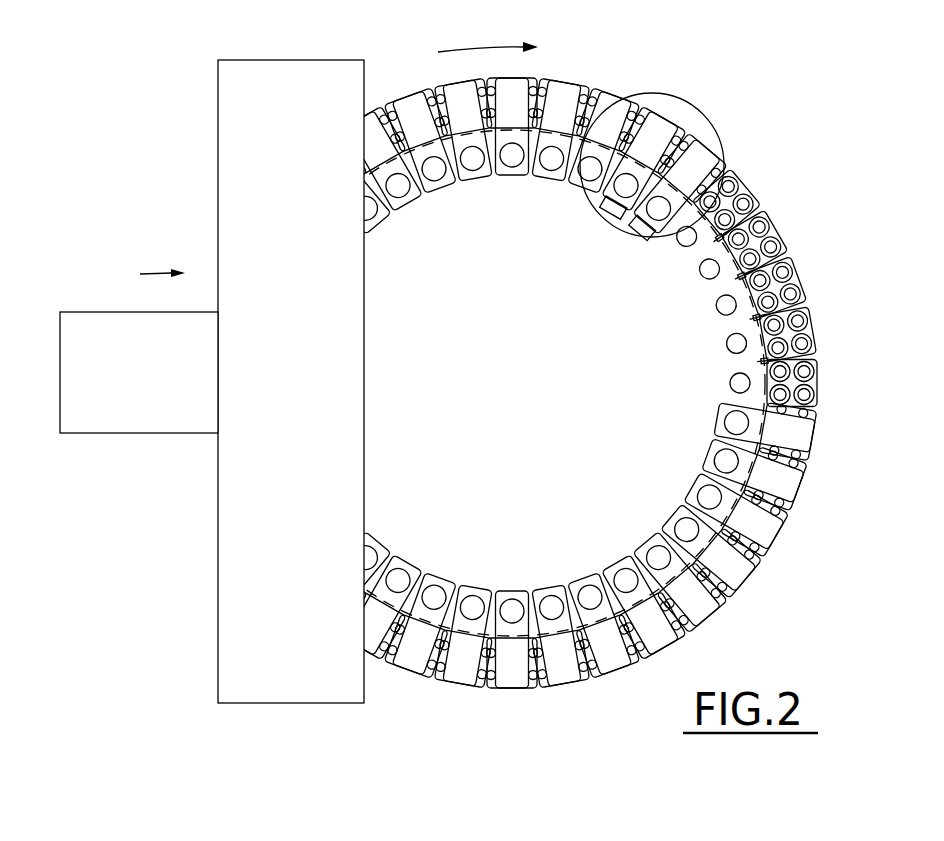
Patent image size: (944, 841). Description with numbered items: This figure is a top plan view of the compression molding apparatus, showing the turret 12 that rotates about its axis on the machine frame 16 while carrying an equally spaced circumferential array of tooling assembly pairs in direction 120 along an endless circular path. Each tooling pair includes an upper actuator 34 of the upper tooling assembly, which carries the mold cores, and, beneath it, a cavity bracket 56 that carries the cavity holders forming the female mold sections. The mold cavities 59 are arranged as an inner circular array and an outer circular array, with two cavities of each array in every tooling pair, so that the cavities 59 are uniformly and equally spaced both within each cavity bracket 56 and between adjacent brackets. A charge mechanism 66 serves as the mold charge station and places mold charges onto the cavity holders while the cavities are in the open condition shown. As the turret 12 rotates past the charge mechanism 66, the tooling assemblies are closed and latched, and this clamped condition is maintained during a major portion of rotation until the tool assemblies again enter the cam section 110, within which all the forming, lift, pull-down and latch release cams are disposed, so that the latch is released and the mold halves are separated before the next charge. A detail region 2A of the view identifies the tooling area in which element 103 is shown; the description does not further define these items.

The turret 12 is at (856, 236).
The machine frame 16 is at (145, 275).
The upper actuator 34 is at (579, 383).
The cavity bracket 56 is at (781, 288).
The mold cavities 59 is at (748, 288).
The charge mechanism 66 is at (160, 433).
The slide member 103 is at (640, 210).
The cam section 110 is at (307, 67).
The direction 120 is at (473, 46).
The detail view circle 2A is at (714, 112).